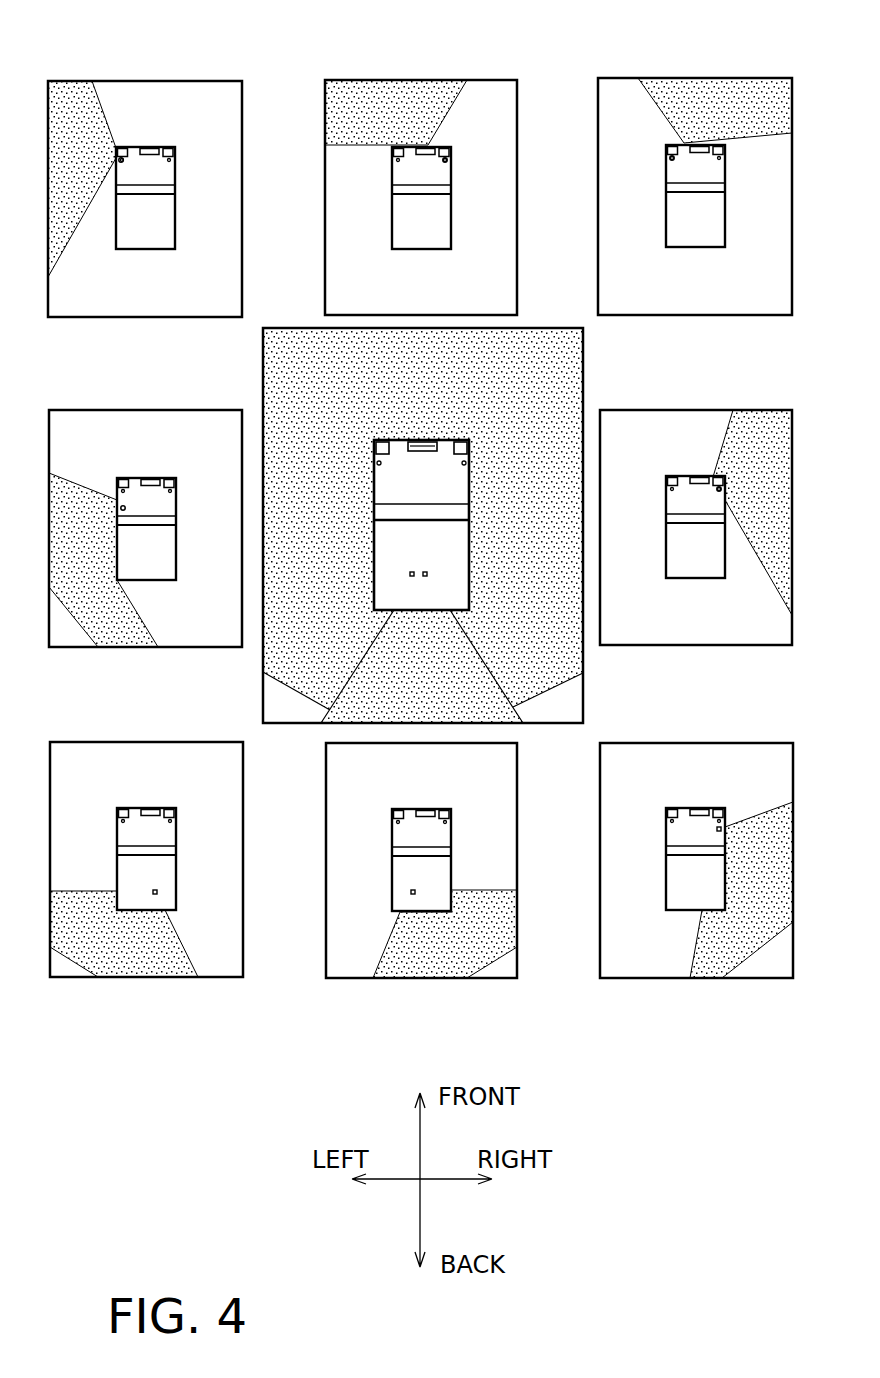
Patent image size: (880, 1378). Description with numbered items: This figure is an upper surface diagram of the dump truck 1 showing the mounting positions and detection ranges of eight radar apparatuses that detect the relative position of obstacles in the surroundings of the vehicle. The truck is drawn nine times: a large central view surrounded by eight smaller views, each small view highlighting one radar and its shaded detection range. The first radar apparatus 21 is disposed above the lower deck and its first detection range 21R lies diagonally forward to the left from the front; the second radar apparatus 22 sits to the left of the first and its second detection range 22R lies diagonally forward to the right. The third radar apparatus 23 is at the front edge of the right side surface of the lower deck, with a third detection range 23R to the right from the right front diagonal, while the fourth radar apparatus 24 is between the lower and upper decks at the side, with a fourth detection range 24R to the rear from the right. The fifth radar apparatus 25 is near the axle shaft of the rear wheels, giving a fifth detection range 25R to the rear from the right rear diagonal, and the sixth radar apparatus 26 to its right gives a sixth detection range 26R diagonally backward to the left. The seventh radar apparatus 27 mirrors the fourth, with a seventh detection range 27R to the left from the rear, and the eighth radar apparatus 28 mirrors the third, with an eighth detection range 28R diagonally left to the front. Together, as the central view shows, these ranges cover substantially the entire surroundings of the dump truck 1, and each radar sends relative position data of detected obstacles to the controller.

The dump truck 1 is at (431, 496).
The first radar apparatus 21 is at (452, 152).
The second radar apparatus 22 is at (688, 145).
The third radar apparatus 23 is at (713, 488).
The fourth radar apparatus 24 is at (717, 830).
The fifth radar apparatus 25 is at (408, 891).
The sixth radar apparatus 26 is at (159, 892).
The seventh radar apparatus 27 is at (124, 508).
The eighth radar apparatus 28 is at (122, 149).
The first detection range 21R is at (413, 90).
The second detection range 22R is at (690, 90).
The third detection range 23R is at (765, 432).
The fourth detection range 24R is at (705, 978).
The fifth detection range 25R is at (420, 978).
The sixth detection range 26R is at (147, 978).
The seventh detection range 27R is at (134, 648).
The eighth detection range 28R is at (62, 80).